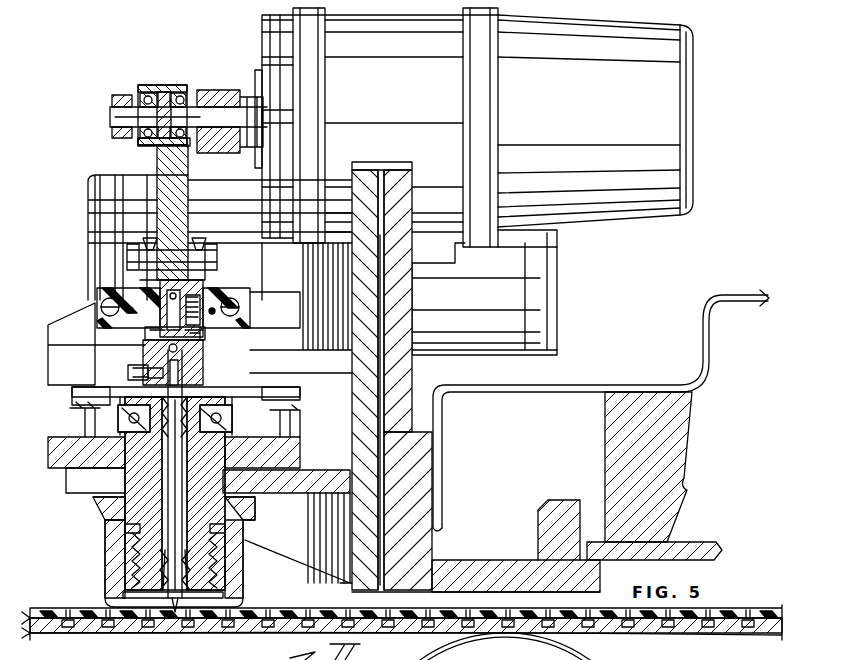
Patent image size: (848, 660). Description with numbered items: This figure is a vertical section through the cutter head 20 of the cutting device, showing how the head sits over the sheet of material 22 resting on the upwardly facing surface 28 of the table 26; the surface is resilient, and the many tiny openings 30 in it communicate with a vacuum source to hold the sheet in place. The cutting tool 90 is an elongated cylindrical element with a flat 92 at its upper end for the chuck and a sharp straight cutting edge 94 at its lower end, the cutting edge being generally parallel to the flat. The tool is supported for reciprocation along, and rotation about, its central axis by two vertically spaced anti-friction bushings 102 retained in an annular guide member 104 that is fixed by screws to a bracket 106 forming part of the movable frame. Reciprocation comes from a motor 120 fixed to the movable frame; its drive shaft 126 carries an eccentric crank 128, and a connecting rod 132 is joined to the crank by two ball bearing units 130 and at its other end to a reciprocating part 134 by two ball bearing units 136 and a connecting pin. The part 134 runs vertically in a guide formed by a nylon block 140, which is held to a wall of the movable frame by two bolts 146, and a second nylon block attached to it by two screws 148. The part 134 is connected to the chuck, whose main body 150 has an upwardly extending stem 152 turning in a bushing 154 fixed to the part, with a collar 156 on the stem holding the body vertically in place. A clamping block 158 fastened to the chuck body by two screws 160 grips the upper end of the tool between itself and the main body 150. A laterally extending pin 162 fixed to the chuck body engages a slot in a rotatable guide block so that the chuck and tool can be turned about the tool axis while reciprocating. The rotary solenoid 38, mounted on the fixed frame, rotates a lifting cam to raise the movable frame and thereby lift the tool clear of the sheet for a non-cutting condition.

The cutter head 20 is at (730, 160).
The sheet of material 22 is at (70, 610).
The table 26 is at (60, 630).
The upwardly facing surface 28 is at (66, 612).
The tiny openings 30 is at (116, 624).
The rotary solenoid 38 is at (540, 276).
The cutting tool 90 is at (176, 458).
The flat 92 is at (206, 380).
The cutting edge 94 is at (180, 604).
The bushings 102 is at (160, 434).
The annular guide member 104 is at (62, 436).
The bracket 106 is at (318, 488).
The motor 120 is at (566, 224).
The drive shaft 126 is at (205, 90).
The eccentric crank 128 is at (110, 116).
The ball bearing units 130 is at (196, 90).
The connecting rod 132 is at (170, 165).
The reciprocating part 134 is at (200, 293).
The ball bearing units 136 is at (142, 248).
The nylon block 140 is at (252, 322).
The bolts 146 is at (100, 303).
The screws 148 is at (132, 288).
The main body 150 is at (195, 352).
The stem 152 is at (160, 320).
The bushing 154 is at (203, 328).
The collar 156 is at (195, 285).
The clamping block 158 is at (143, 356).
The screws 160 is at (143, 372).
The laterally extending pin 162 is at (98, 342).